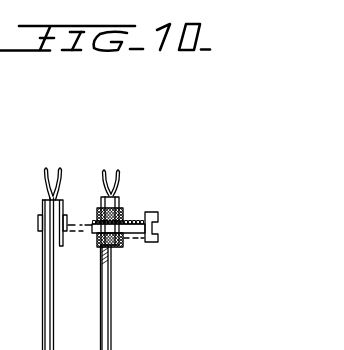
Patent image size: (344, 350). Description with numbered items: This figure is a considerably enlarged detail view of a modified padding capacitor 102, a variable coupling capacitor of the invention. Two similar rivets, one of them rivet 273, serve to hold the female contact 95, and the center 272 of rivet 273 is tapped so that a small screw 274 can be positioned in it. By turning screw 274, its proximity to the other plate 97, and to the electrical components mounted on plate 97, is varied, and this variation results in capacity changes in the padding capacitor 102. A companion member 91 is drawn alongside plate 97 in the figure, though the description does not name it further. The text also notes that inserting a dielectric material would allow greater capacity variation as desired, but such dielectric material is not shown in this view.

The plate 97 is at (42, 309).
The second push rod 91 is at (120, 251).
The female contact 95 is at (107, 172).
The center of rivet 272 is at (127, 219).
The rivet 273 is at (100, 217).
The small screw 274 is at (158, 216).
The padding capacitor 102 is at (82, 245).